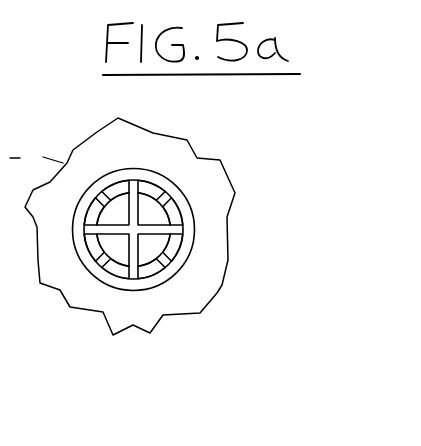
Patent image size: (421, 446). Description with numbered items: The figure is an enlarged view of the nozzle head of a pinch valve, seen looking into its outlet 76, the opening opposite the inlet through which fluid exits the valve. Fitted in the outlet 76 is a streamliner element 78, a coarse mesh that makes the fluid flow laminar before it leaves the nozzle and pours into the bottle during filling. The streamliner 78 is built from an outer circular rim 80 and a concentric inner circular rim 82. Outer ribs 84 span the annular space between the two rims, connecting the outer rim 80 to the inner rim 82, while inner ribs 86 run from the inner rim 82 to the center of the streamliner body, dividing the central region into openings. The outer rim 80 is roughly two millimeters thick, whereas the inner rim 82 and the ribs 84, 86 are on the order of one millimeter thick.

The outlet 76 is at (130, 268).
The streamliner element 78 is at (201, 207).
The outer circular rim 80 is at (150, 280).
The inner circular rim 82 is at (159, 164).
The outer ribs 84 is at (195, 229).
The inner ribs 86 is at (103, 178).